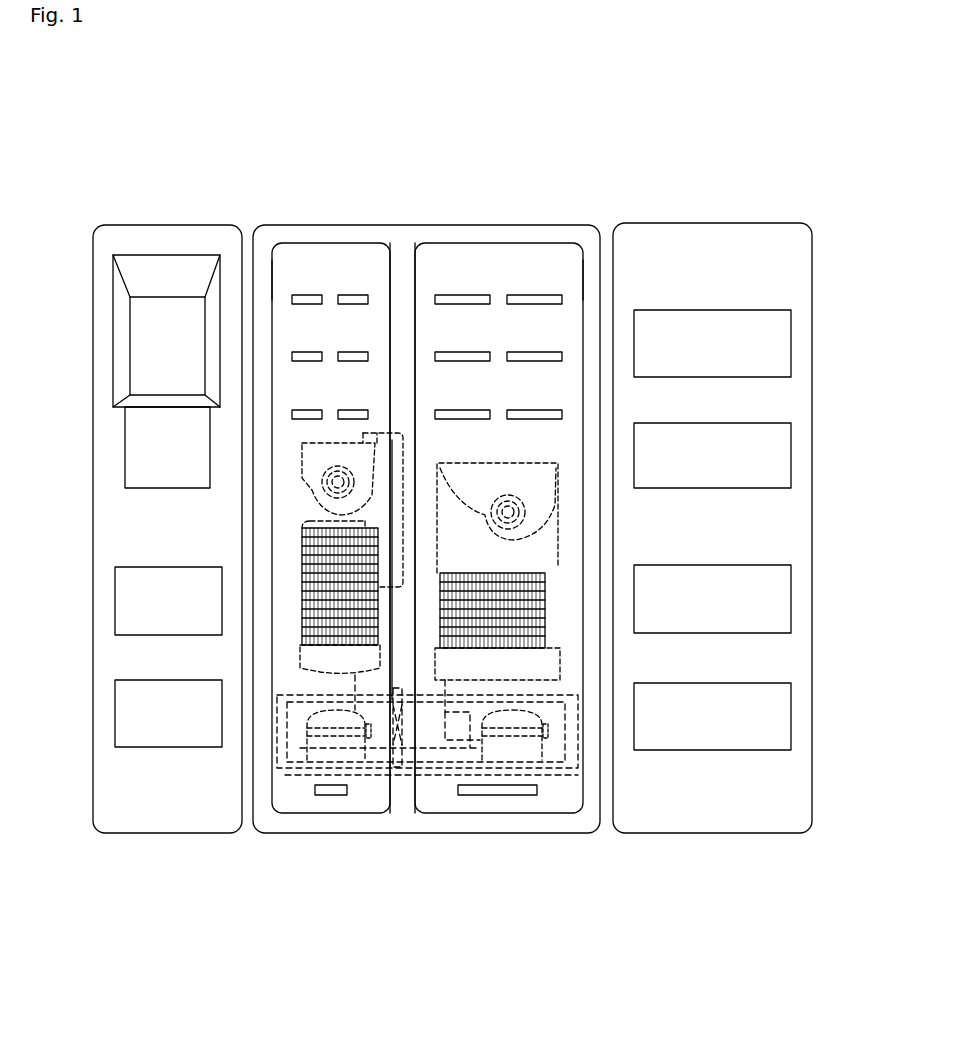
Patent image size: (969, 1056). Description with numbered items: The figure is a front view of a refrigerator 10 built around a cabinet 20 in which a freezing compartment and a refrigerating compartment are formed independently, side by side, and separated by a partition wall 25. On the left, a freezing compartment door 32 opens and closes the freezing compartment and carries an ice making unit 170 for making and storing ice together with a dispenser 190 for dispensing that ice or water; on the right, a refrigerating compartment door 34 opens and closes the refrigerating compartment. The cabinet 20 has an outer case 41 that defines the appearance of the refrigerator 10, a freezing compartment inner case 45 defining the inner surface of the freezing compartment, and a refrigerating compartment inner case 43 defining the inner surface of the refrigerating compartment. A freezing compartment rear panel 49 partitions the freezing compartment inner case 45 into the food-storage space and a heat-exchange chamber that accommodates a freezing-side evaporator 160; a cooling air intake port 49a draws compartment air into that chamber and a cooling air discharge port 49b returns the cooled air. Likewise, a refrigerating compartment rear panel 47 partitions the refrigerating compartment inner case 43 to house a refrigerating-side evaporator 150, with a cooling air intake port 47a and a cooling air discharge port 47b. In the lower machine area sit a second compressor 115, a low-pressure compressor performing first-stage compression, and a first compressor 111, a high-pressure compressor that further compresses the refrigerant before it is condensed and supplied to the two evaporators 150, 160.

The refrigerator 10 is at (556, 121).
The cabinet 20 is at (589, 216).
The partition wall 25 is at (402, 330).
The freezing compartment door 32 is at (165, 235).
The refrigerating compartment door 34 is at (712, 232).
The outer case 41 is at (402, 225).
The refrigerating compartment inner case 43 is at (582, 290).
The freezing compartment inner case 45 is at (273, 290).
The refrigerating compartment rear panel 47 is at (493, 275).
The cooling air intake port 47a is at (500, 797).
The cooling air discharge port 47b is at (548, 410).
The freezing compartment rear panel 49 is at (345, 275).
The cooling air intake port 49a is at (333, 797).
The cooling air discharge port 49b is at (305, 413).
The first compressor 111 is at (540, 752).
The second compressor 115 is at (305, 752).
The refrigerating-side evaporator 150 is at (540, 603).
The freezing-side evaporator 160 is at (300, 540).
The ice making unit 170 is at (122, 310).
The dispenser 190 is at (137, 444).